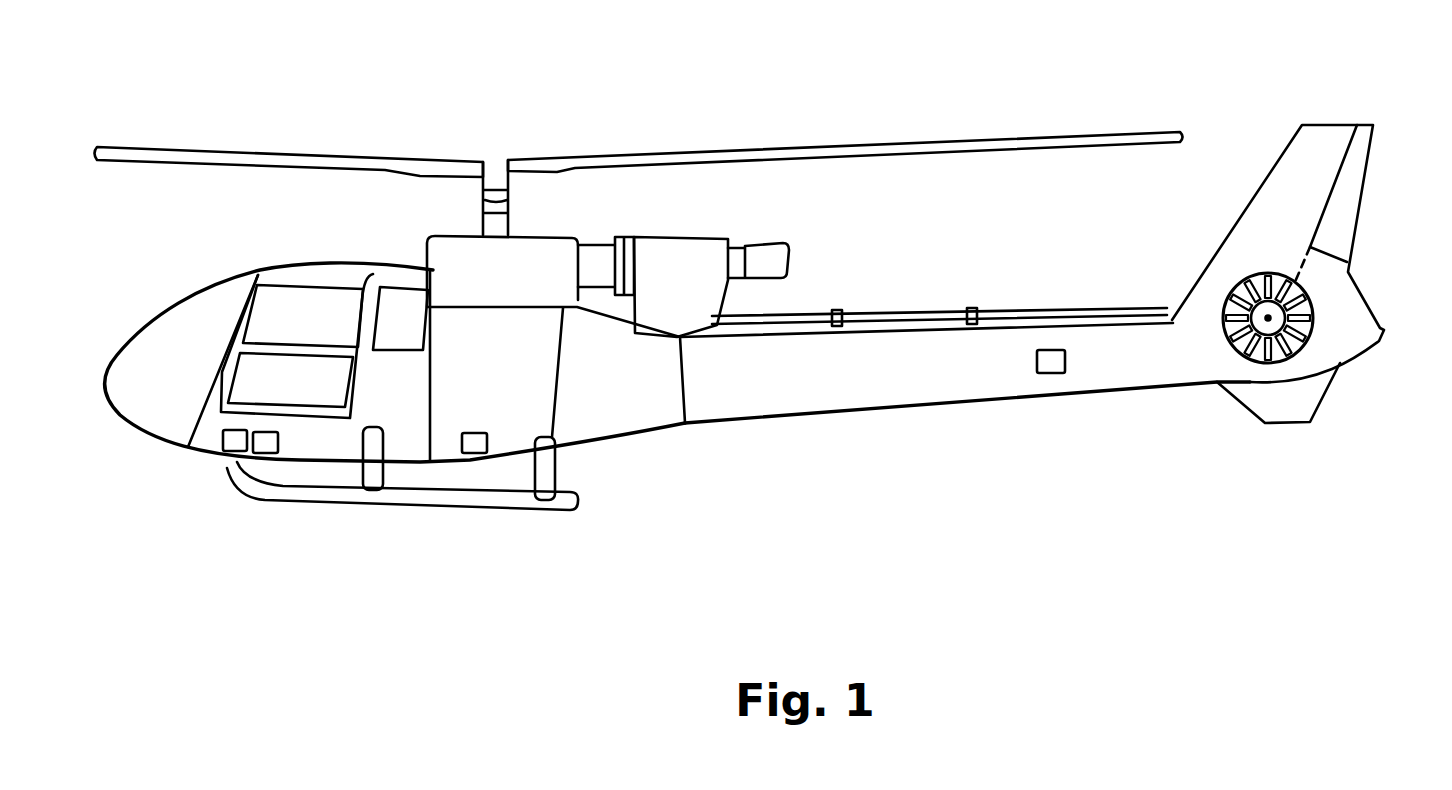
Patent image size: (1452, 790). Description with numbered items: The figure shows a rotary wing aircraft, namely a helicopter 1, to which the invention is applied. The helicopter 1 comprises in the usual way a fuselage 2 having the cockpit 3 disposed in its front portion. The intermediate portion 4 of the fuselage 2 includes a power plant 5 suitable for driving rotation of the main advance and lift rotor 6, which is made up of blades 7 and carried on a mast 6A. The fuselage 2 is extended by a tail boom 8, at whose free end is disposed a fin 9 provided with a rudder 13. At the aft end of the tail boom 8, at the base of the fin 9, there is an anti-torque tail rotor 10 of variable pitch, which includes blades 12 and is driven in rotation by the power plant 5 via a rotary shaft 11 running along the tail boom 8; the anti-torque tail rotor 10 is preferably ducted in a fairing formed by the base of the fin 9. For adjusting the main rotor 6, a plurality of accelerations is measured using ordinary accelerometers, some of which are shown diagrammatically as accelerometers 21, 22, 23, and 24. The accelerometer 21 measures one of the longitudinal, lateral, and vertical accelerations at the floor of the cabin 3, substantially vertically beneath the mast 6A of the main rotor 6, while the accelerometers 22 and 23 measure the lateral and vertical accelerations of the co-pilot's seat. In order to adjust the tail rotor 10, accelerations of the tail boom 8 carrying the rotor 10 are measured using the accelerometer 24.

The helicopter 1 is at (680, 452).
The fuselage 2 is at (452, 456).
The cockpit 3 is at (275, 310).
The intermediate portion 4 is at (512, 363).
The power plant 5 is at (655, 243).
The main advance and lift rotor 6 is at (639, 133).
The mast 6A is at (542, 197).
The blades 7 is at (205, 148).
The tail boom 8 is at (927, 382).
The fin 9 is at (1283, 177).
The anti-torque tail rotor 10 is at (1251, 367).
The rotary shaft 11 is at (875, 312).
The blades 12 is at (1290, 320).
The rudder 13 is at (1357, 165).
The accelerometer 21 is at (480, 450).
The accelerometer 22 is at (229, 465).
The accelerometer 23 is at (267, 455).
The accelerometer 24 is at (1060, 373).